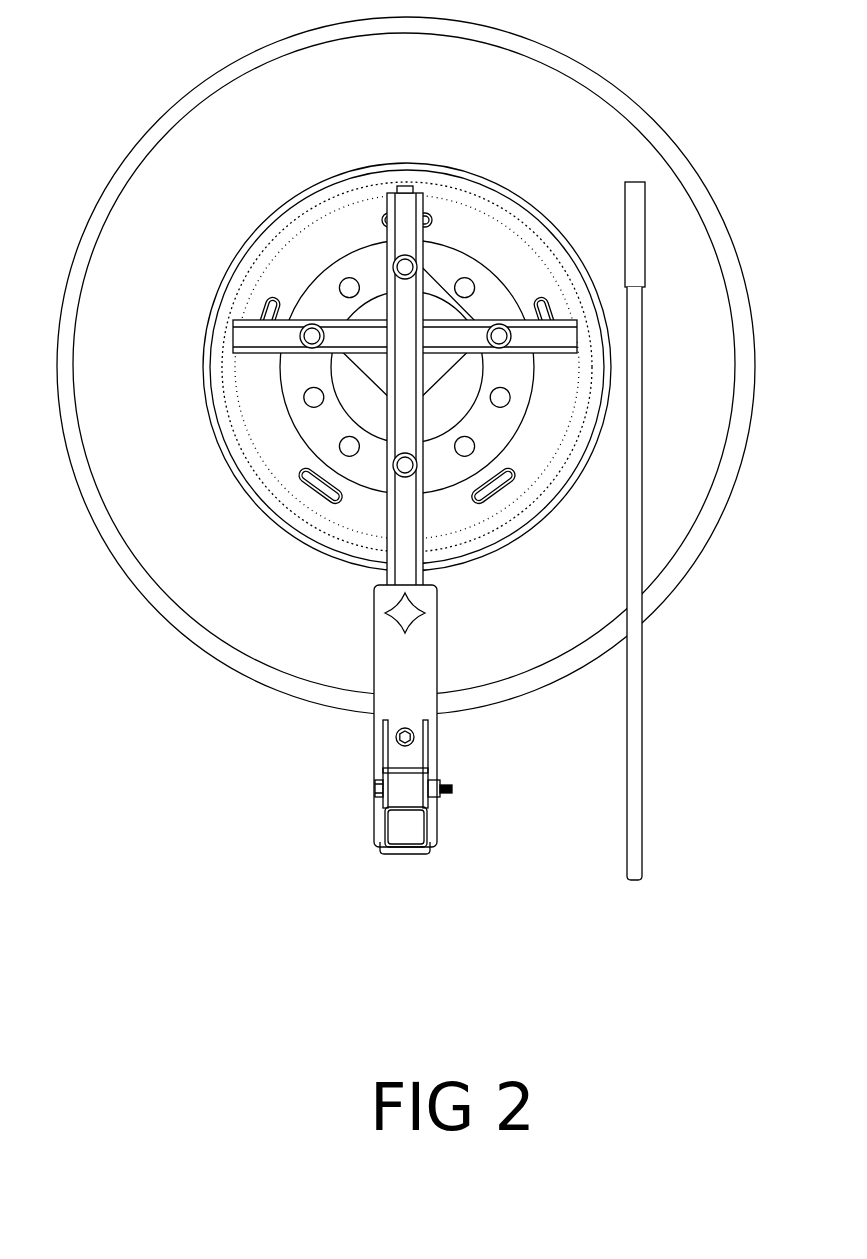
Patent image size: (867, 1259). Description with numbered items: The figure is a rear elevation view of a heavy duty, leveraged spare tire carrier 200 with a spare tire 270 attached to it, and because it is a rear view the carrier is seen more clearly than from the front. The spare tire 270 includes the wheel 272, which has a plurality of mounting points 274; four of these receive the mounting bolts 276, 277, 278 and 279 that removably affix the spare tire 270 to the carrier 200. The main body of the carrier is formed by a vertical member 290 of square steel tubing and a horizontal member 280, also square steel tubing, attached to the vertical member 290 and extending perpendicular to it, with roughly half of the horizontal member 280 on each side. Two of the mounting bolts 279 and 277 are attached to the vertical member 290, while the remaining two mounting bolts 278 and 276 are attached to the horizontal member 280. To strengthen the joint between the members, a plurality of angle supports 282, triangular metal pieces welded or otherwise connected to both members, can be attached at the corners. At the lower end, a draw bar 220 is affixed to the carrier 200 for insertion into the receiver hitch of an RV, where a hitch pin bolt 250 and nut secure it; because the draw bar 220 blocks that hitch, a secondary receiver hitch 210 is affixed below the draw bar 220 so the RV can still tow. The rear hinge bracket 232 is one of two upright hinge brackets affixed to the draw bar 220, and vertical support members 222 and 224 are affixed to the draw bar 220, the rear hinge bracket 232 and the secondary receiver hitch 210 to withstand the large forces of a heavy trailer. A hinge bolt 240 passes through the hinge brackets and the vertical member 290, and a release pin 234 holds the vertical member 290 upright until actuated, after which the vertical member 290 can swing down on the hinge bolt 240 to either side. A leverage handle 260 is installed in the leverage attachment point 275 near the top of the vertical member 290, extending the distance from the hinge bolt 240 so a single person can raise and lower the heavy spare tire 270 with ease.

The heavy duty, leveraged spare tire carrier 200 is at (426, 559).
The secondary receiver hitch 210 is at (423, 853).
The draw bar 220 is at (405, 795).
The vertical support member 222 is at (430, 752).
The vertical support member 224 is at (383, 767).
The rear hinge bracket 232 is at (422, 710).
The release pin 234 is at (418, 613).
The hinge bolt 240 is at (395, 740).
The hitch pin bolt 250 is at (380, 787).
The leverage handle 260 is at (633, 712).
The spare tire 270 is at (402, 365).
The wheel 272 is at (385, 328).
The mounting points 274 is at (338, 283).
The leverage attachment point 275 is at (403, 186).
The mounting bolt 276 is at (500, 333).
The mounting bolt 277 is at (405, 267).
The mounting bolt 278 is at (310, 340).
The mounting bolt 279 is at (405, 463).
The horizontal member 280 is at (248, 340).
The angle supports 282 is at (377, 307).
The vertical member 290 is at (400, 556).